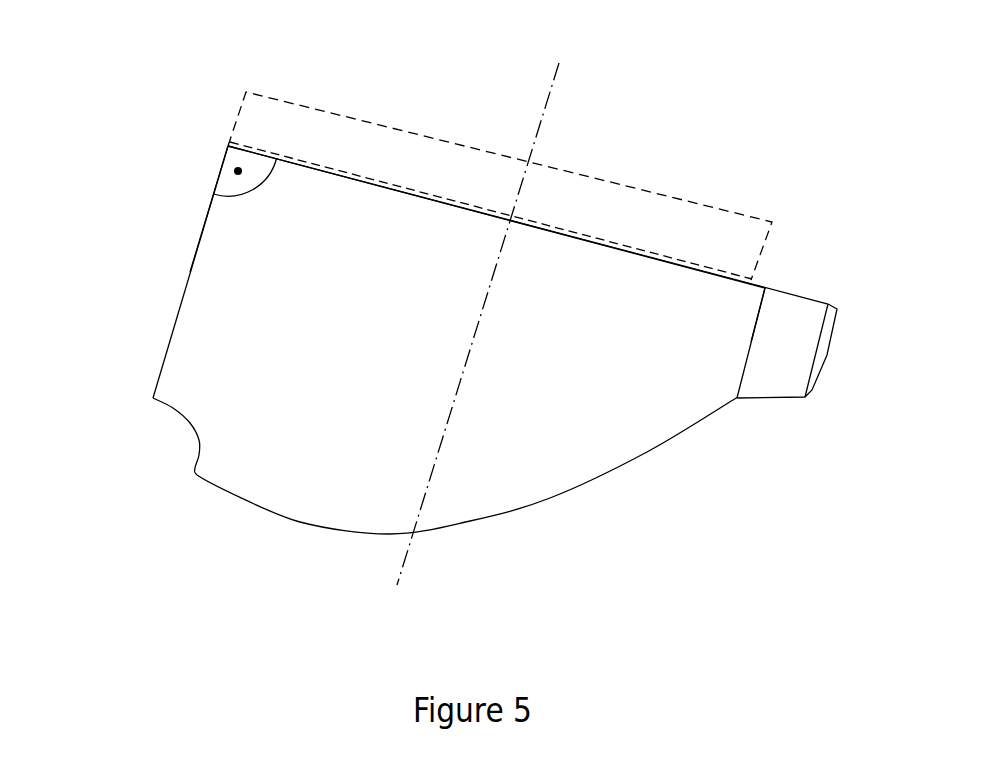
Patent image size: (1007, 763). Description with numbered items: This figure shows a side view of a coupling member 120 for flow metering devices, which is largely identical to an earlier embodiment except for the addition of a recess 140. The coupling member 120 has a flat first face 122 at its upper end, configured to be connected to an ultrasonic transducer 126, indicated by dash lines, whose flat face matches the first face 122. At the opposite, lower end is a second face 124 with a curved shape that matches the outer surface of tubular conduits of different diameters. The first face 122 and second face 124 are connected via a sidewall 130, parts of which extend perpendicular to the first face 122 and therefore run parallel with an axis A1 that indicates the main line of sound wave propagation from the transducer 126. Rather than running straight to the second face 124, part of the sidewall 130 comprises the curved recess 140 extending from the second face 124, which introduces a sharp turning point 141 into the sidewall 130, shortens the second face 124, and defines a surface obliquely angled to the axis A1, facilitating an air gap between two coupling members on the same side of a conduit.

The coupling member 120 is at (178, 25).
The first face 122 is at (647, 257).
The second face 124 is at (548, 498).
The ultrasonic transducer 126 is at (585, 202).
The sidewall 130 is at (205, 223).
The recess 140 is at (188, 422).
The sharp turning point 141 is at (152, 398).
The axis A1 is at (545, 105).